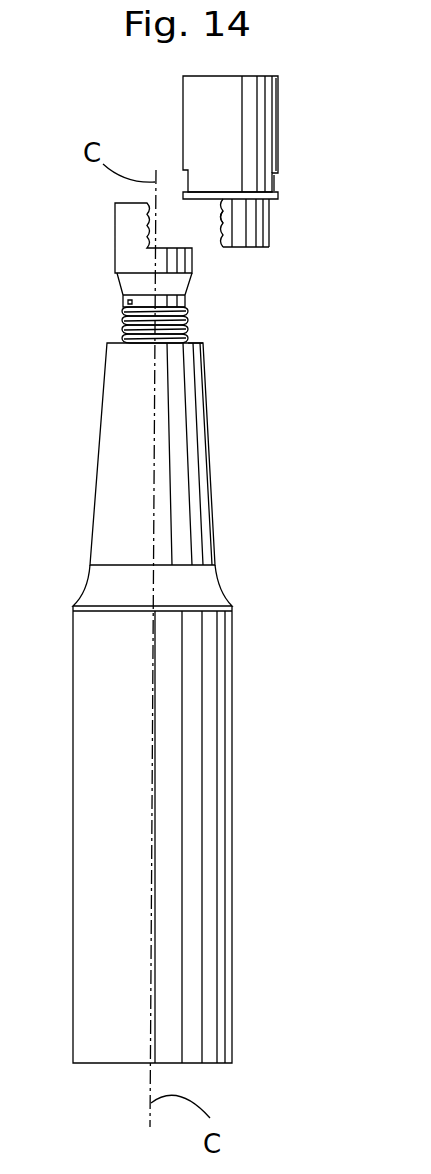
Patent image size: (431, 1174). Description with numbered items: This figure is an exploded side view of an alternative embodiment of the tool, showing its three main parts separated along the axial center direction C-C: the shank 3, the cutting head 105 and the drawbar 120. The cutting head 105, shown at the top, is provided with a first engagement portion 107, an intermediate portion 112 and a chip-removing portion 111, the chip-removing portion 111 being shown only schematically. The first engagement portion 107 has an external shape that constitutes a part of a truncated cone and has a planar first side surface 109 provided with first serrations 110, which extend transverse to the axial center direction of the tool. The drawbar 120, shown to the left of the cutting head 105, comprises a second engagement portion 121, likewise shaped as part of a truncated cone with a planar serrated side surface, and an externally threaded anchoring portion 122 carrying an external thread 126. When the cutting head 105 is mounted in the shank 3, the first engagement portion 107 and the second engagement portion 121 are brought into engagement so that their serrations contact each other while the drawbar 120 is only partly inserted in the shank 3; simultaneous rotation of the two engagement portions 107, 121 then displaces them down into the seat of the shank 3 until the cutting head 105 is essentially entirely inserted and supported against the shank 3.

The shank 3 is at (229, 552).
The cutting head 105 is at (172, 118).
The first engagement portion 107 is at (281, 221).
The first side surface 109 is at (217, 219).
The first serrations 110 is at (230, 273).
The chip-removing portion 111 is at (283, 102).
The intermediate portion 112 is at (283, 182).
The drawbar 120 is at (111, 290).
The second engagement portion 121 is at (111, 218).
The anchoring portion 122 is at (117, 327).
The external thread 126 is at (188, 331).